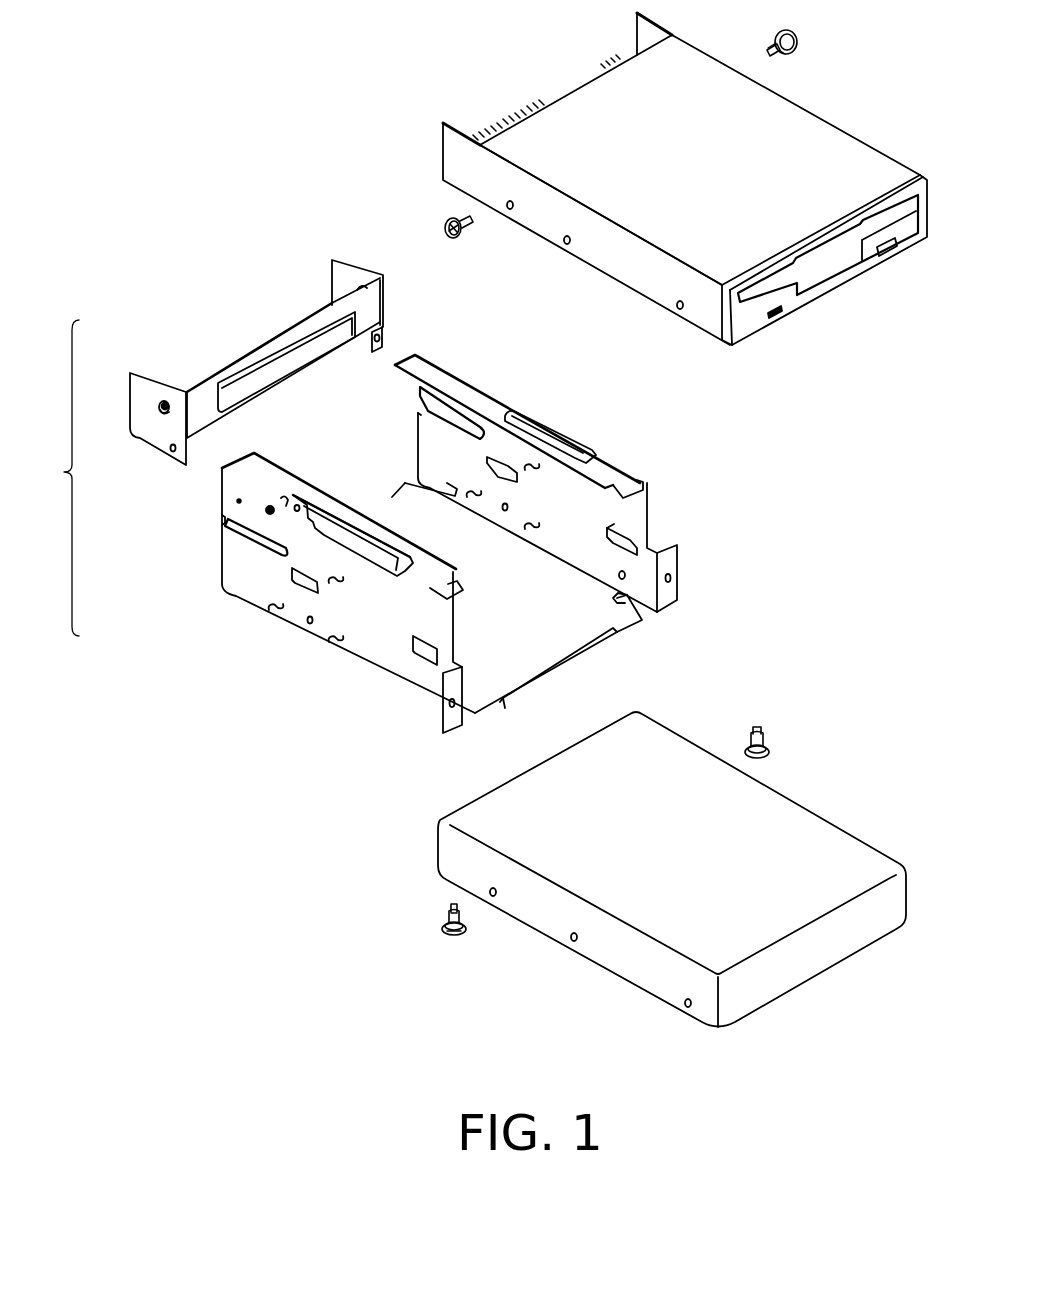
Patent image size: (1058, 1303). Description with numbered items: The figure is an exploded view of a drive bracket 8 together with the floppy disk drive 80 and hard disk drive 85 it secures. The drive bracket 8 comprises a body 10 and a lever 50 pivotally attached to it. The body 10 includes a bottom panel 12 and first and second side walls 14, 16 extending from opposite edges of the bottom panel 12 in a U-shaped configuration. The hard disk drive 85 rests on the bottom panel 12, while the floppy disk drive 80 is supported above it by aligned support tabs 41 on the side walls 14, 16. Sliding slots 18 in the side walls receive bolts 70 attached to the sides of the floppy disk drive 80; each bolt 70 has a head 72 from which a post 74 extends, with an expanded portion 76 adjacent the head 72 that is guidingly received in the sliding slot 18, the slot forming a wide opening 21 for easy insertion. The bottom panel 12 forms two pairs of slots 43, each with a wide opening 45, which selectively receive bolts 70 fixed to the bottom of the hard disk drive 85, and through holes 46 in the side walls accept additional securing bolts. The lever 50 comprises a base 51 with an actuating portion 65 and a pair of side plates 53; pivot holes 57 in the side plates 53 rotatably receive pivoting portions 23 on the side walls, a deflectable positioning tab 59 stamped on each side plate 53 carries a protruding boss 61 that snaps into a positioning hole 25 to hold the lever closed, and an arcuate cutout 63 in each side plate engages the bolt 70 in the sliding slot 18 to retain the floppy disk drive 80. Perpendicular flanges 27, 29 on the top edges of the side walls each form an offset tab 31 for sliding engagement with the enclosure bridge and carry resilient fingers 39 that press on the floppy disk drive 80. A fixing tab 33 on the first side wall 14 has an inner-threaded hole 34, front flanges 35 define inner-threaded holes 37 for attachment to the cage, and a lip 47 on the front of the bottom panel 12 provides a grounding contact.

The drive bracket 8 is at (398, 495).
The body 10 is at (455, 554).
The bottom panel 12 is at (527, 587).
The first side wall 14 is at (422, 582).
The second side wall 16 is at (567, 467).
The sliding slot 18 is at (269, 535).
The wide opening 21 is at (222, 518).
The pivoting portion 23 is at (267, 513).
The positioning hole 25 is at (236, 501).
The flange 27 is at (243, 468).
The flange 29 is at (425, 368).
The offset tab 31 is at (344, 532).
The fixing tab 33 is at (298, 505).
The inner-threaded hole 34 is at (284, 503).
The front flange 35 is at (452, 718).
The inner-threaded hole 37 is at (455, 707).
The resilient finger 39 is at (458, 582).
The support tab 41 is at (623, 530).
The slot 43 is at (434, 492).
The wide opening 45 is at (435, 490).
The through hole 46 is at (279, 613).
The lip 47 is at (537, 687).
The lever 50 is at (232, 357).
The base 51 is at (195, 398).
The side plate 53 is at (340, 278).
The pivot hole 57 is at (170, 452).
The positioning tab 59 is at (158, 405).
The protruding boss 61 is at (165, 400).
The arcuate cutout 63 is at (140, 437).
The actuating portion 65 is at (275, 333).
The bolt 70 is at (465, 243).
The head 72 is at (797, 40).
The post 74 is at (772, 42).
The expanded portion 76 is at (798, 50).
The floppy disk drive 80 is at (790, 315).
The hard disk drive 85 is at (771, 1015).